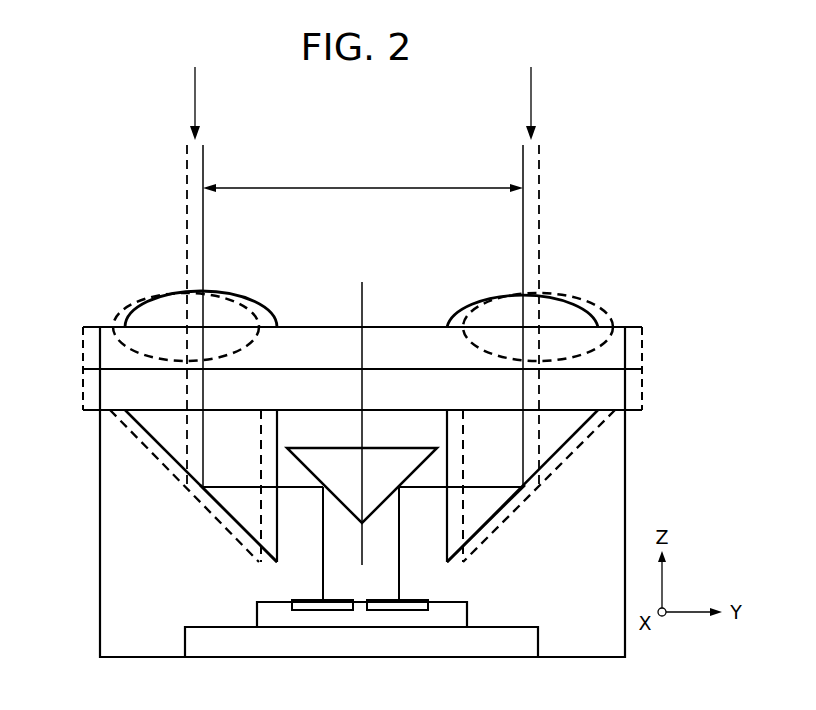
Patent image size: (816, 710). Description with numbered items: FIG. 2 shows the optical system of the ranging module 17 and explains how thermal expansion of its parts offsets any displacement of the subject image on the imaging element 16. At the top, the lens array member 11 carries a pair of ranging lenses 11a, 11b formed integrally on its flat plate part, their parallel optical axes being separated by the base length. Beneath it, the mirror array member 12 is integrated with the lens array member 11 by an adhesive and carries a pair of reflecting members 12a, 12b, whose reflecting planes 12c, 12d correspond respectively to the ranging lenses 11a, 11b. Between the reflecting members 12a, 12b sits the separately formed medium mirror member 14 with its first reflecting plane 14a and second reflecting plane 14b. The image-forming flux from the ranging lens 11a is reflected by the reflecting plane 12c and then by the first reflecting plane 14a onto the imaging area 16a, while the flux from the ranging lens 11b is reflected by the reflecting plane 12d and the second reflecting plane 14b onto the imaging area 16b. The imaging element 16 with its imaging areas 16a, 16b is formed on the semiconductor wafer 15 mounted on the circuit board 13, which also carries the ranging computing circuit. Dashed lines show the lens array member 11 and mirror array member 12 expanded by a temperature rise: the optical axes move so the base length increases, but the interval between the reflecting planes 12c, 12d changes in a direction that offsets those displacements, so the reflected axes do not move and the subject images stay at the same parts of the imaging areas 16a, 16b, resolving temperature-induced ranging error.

The lens array member 11 is at (96, 348).
The ranging lens 11a is at (117, 313).
The ranging lens 11b is at (608, 320).
The mirror array member 12 is at (96, 390).
The reflecting member 12a is at (170, 437).
The reflecting member 12b is at (555, 435).
The reflecting plane 12c is at (232, 522).
The reflecting plane 12d is at (492, 520).
The circuit board 13 is at (530, 643).
The medium mirror member 14 is at (382, 457).
The first reflecting plane 14a is at (342, 516).
The second reflecting plane 14b is at (383, 516).
The semiconductor wafer 15 is at (462, 614).
The imaging element 16 is at (240, 602).
The imaging area 16a is at (313, 600).
The imaging area 16b is at (408, 600).
The ranging module 17 is at (96, 532).